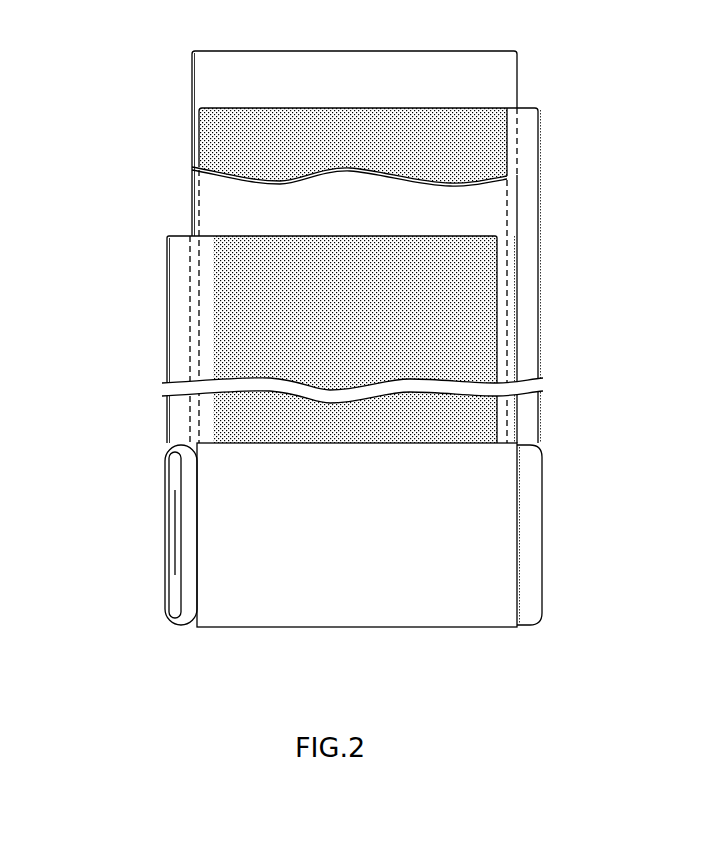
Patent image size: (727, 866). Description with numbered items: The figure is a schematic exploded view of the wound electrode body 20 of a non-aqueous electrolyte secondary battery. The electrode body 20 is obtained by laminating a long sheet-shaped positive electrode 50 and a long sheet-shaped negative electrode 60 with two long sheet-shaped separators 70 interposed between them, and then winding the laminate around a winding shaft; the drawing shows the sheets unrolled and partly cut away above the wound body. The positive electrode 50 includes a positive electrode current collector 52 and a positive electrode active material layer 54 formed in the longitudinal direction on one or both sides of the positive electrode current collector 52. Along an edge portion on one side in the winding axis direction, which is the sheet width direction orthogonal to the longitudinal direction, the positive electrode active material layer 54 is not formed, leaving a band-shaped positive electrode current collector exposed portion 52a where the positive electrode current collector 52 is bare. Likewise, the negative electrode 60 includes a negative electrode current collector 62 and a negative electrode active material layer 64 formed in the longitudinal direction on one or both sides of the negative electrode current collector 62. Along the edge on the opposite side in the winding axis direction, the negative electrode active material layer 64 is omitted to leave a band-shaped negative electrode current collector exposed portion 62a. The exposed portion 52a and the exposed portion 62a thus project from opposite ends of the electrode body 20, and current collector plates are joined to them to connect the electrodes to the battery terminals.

The electrode body 20 is at (436, 606).
The positive electrode 50 is at (280, 395).
The positive electrode current collector 52 is at (167, 372).
The positive electrode current collector exposed portion 52a is at (180, 338).
The positive electrode active material layer 54 is at (228, 253).
The negative electrode 60 is at (421, 331).
The negative electrode current collector 62 is at (539, 282).
The negative electrode current collector exposed portion 62a is at (527, 230).
The negative electrode active material layer 64 is at (505, 128).
The separator 70 is at (205, 78).